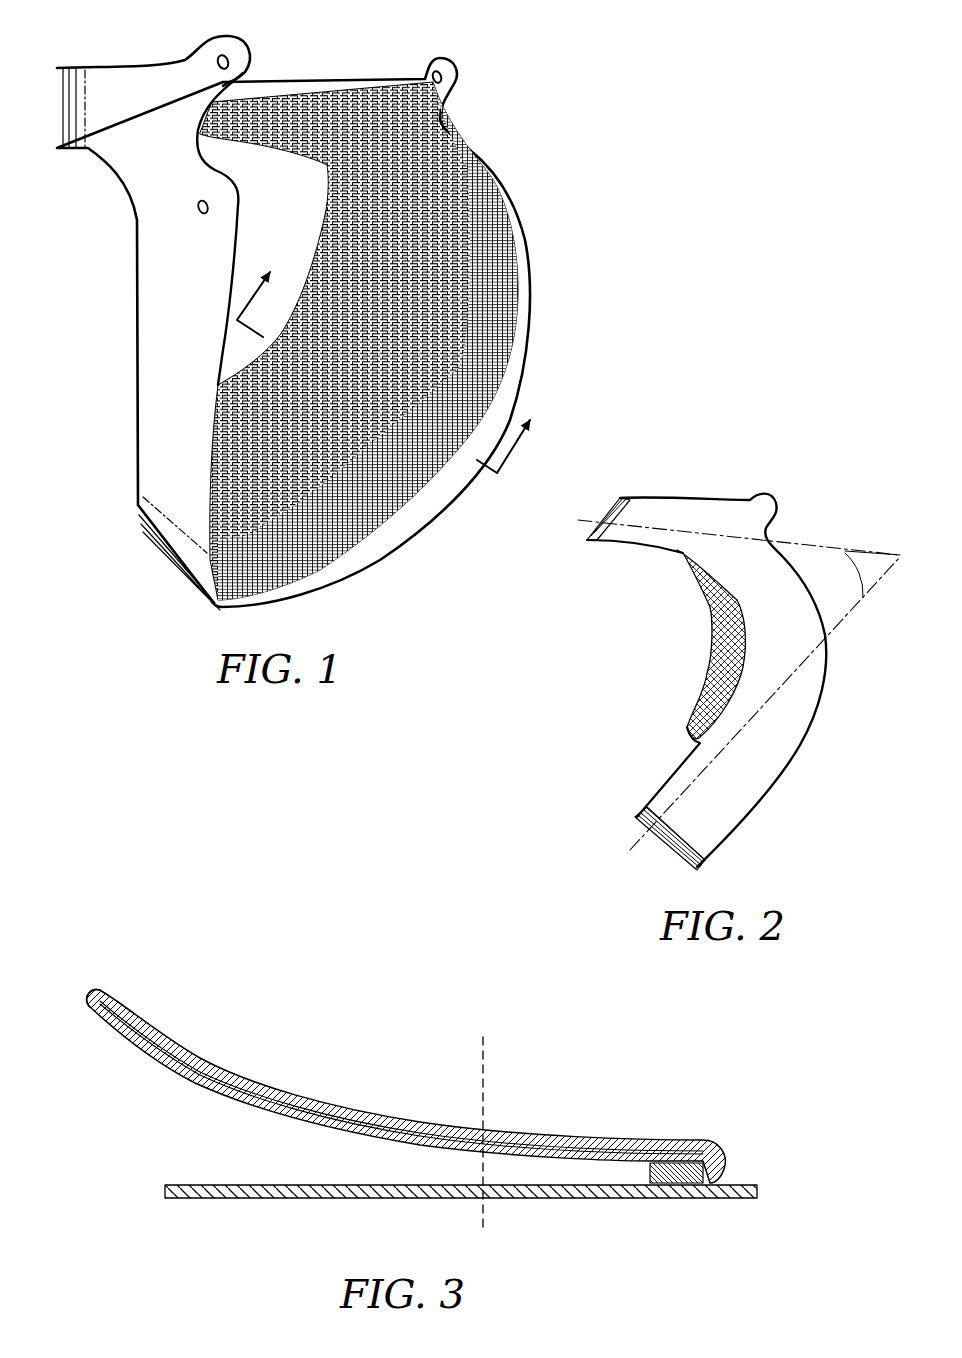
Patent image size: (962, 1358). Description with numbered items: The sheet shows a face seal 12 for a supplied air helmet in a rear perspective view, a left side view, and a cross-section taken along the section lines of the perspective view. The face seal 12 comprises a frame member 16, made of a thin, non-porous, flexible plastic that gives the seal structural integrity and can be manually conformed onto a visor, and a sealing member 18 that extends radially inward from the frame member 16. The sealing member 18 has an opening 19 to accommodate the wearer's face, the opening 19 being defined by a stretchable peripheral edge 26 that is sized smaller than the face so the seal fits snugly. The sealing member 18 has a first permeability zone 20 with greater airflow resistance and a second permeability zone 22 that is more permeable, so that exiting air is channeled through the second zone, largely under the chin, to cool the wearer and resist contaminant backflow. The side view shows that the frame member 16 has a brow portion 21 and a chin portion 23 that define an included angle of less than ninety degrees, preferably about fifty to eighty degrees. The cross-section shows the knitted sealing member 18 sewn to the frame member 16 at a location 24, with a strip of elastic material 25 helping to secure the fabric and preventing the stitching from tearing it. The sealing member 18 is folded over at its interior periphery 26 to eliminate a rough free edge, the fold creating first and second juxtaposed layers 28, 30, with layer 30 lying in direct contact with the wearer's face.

In FIG. 1, the face seal 12 is at (338, 314).
In FIG. 2, the face seal 12 is at (739, 660).
In FIG. 3, the face seal 12 is at (407, 1109).
In FIG. 1, the frame member 16 is at (427, 507).
In FIG. 2, the frame member 16 is at (787, 713).
In FIG. 3, the frame member 16 is at (550, 1205).
In FIG. 1, the sealing member 18 is at (383, 113).
In FIG. 3, the sealing member 18 is at (340, 1103).
In FIG. 1, the opening 19 is at (280, 225).
In FIG. 1, the first permeability zone 20 is at (497, 280).
In FIG. 3, the first permeability zone 20 is at (723, 1130).
In FIG. 2, the brow portion 21 is at (683, 510).
In FIG. 1, the second permeability zone 22 is at (323, 107).
In FIG. 3, the second permeability zone 22 is at (391, 1057).
In FIG. 2, the chin portion 23 is at (727, 817).
In FIG. 3, the location 24 is at (695, 1200).
In FIG. 3, the strip of elastic material 25 is at (650, 1165).
In FIG. 1, the peripheral edge 26 is at (327, 183).
In FIG. 3, the peripheral edge 26 is at (97, 1000).
In FIG. 3, the first juxtaposed layer 28 is at (142, 1069).
In FIG. 3, the second juxtaposed layer 30 is at (220, 1080).